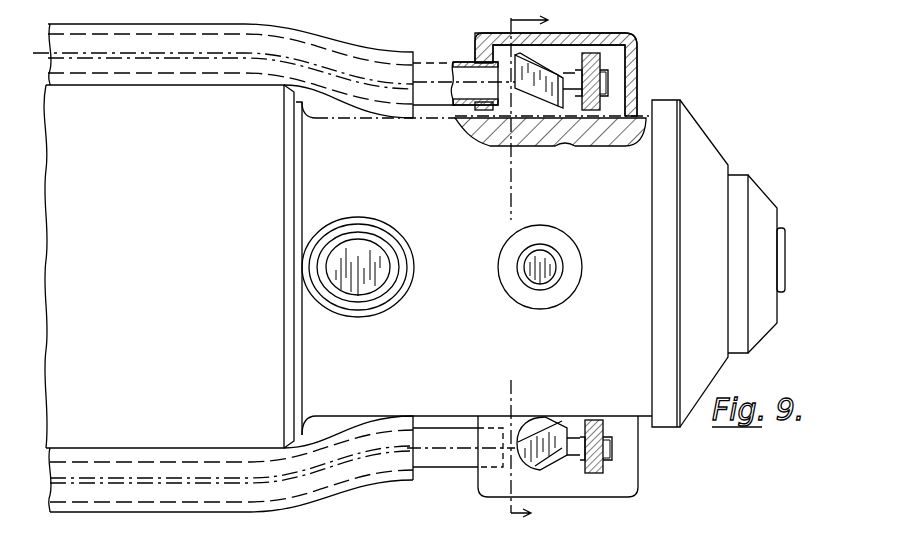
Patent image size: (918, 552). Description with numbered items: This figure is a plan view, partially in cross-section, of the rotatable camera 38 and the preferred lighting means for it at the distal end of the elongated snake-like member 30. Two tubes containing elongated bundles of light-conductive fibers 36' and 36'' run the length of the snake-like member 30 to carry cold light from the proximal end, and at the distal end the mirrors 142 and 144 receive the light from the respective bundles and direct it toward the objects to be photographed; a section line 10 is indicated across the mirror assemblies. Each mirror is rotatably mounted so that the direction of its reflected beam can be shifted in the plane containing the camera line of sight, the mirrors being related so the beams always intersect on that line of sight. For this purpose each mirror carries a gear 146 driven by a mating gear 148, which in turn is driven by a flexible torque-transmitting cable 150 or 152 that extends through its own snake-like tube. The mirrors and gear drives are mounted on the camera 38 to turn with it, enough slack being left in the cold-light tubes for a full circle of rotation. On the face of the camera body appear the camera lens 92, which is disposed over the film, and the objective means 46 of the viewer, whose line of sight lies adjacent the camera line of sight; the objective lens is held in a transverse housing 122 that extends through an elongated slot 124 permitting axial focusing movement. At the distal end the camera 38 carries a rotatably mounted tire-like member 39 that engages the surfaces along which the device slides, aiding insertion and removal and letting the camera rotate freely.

The snake-like member 30 is at (118, 521).
The light-conductive fiber bundle 36' is at (223, 65).
The light-conductive fiber bundle 36'' is at (231, 475).
The flexible torque-transmitting cable 150 is at (428, 80).
The flexible torque-transmitting cable 152 is at (443, 453).
The mirror 142 is at (542, 94).
The mirror 144 is at (538, 433).
The gear 146 is at (602, 63).
The mating gear 148 is at (604, 92).
The section line 10 is at (541, 280).
The rotatable camera 38 is at (707, 129).
The tire-like member 39 is at (705, 178).
The objective means 46 is at (347, 247).
The housing 122 is at (380, 232).
The elongated slot 124 is at (408, 250).
The camera lens 92 is at (549, 258).